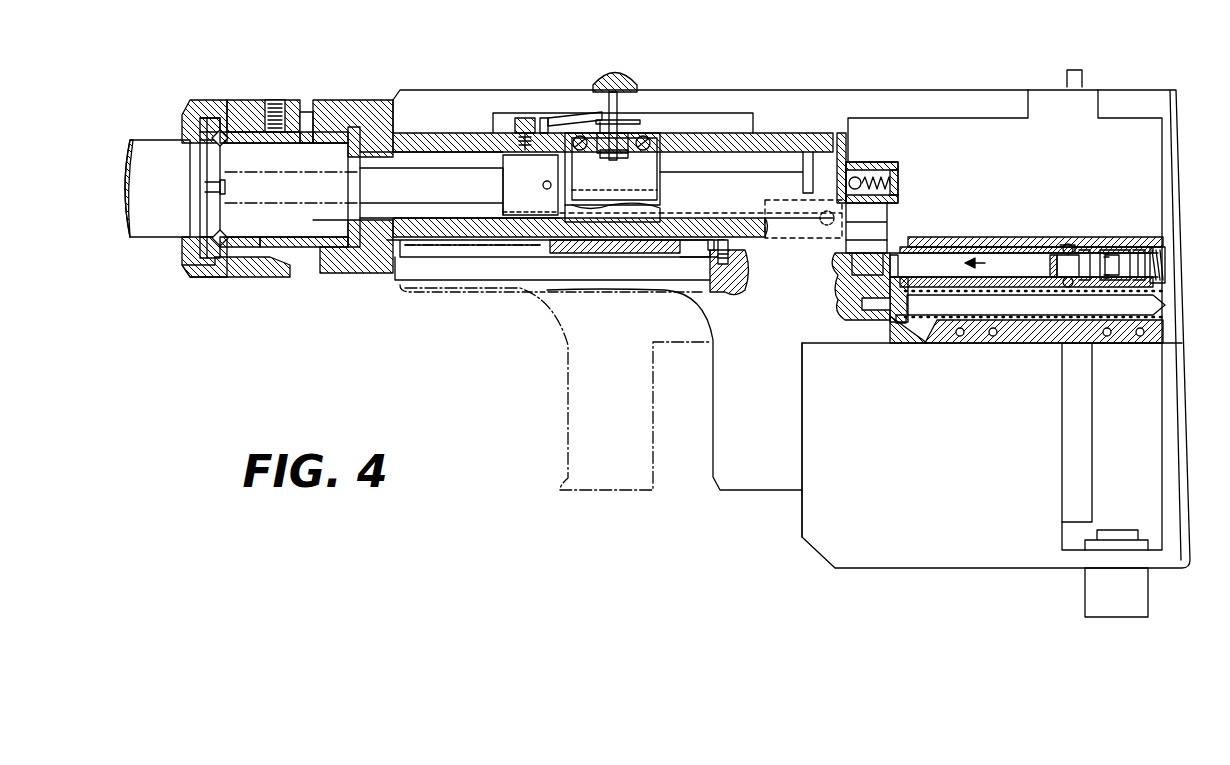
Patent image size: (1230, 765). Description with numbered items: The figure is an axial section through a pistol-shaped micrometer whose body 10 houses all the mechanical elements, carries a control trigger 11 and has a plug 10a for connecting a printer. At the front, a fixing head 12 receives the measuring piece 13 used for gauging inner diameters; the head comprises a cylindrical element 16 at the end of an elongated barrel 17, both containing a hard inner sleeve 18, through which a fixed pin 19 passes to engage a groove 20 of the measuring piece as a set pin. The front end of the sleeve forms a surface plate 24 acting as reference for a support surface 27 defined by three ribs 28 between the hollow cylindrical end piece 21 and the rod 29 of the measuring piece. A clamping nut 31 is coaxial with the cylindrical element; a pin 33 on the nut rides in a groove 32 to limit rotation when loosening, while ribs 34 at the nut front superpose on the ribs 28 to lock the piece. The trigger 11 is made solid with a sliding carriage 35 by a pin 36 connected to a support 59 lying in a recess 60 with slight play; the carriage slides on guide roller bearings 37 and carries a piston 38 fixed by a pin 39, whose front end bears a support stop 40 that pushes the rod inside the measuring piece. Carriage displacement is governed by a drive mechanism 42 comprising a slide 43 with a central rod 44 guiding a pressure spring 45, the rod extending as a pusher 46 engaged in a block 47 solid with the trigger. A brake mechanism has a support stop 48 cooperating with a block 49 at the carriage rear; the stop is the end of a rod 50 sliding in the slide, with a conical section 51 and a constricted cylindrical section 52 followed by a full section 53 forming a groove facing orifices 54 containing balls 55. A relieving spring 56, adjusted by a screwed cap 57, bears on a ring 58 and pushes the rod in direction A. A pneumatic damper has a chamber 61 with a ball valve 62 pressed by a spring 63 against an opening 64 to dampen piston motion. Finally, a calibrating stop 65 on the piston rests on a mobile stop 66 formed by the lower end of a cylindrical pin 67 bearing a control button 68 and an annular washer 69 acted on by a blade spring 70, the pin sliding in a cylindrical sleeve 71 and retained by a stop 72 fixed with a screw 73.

The pistol-shaped body 10 is at (836, 88).
The plug 10a is at (1090, 600).
The control trigger 11 is at (752, 490).
The fixing head 12 is at (195, 290).
The measuring piece 13 is at (140, 245).
The cylindrical element 16 is at (350, 265).
The barrel 17 is at (404, 100).
The inner sleeve 18 is at (312, 250).
The fixed pin 19 is at (308, 125).
The groove 20 is at (354, 128).
The hollow cylindrical end piece 21 is at (270, 245).
The surface plate 24 is at (230, 125).
The support surface 27 is at (206, 125).
The ribs 28 is at (203, 130).
The rod 29 is at (162, 225).
The clamping nut 31 is at (245, 275).
The groove 32 is at (305, 112).
The pin 33 is at (275, 100).
The ribs 34 is at (185, 112).
The sliding carriage 35 is at (610, 258).
The pin 36 is at (734, 292).
The guide roller bearings 37 is at (676, 213).
The piston 38 is at (445, 140).
The fixed pin 39 is at (543, 185).
The support stop 40 is at (375, 186).
The drive mechanism 42 is at (985, 236).
The slide 43 is at (898, 328).
The central rod 44 is at (970, 320).
The pressure spring 45 is at (1025, 322).
The pusher 46 is at (872, 322).
The block 47 is at (828, 330).
The support stop 48 is at (896, 253).
The block 49 is at (866, 262).
The rod 50 is at (948, 260).
The conical section 51 is at (1055, 265).
The cylindrical section 52 is at (1067, 244).
The section 53 is at (1088, 250).
The orifices 54 is at (1056, 248).
The balls 55 is at (1066, 240).
The relieving spring 56 is at (1138, 250).
The cap 57 is at (1168, 265).
The ring 58 is at (1117, 250).
The support 59 is at (748, 258).
The recess 60 is at (705, 255).
The chamber 61 is at (884, 170).
The ball valve 62 is at (866, 162).
The spring 63 is at (900, 183).
The opening 64 is at (838, 170).
The calibrating stop 65 is at (612, 160).
The mobile stop 66 is at (604, 160).
The cylindrical pin 67 is at (612, 92).
The control button 68 is at (622, 78).
The annular washer 69 is at (628, 135).
The blade spring 70 is at (585, 115).
The cylindrical sleeve 71 is at (650, 122).
The stop 72 is at (545, 116).
The screw 73 is at (524, 118).